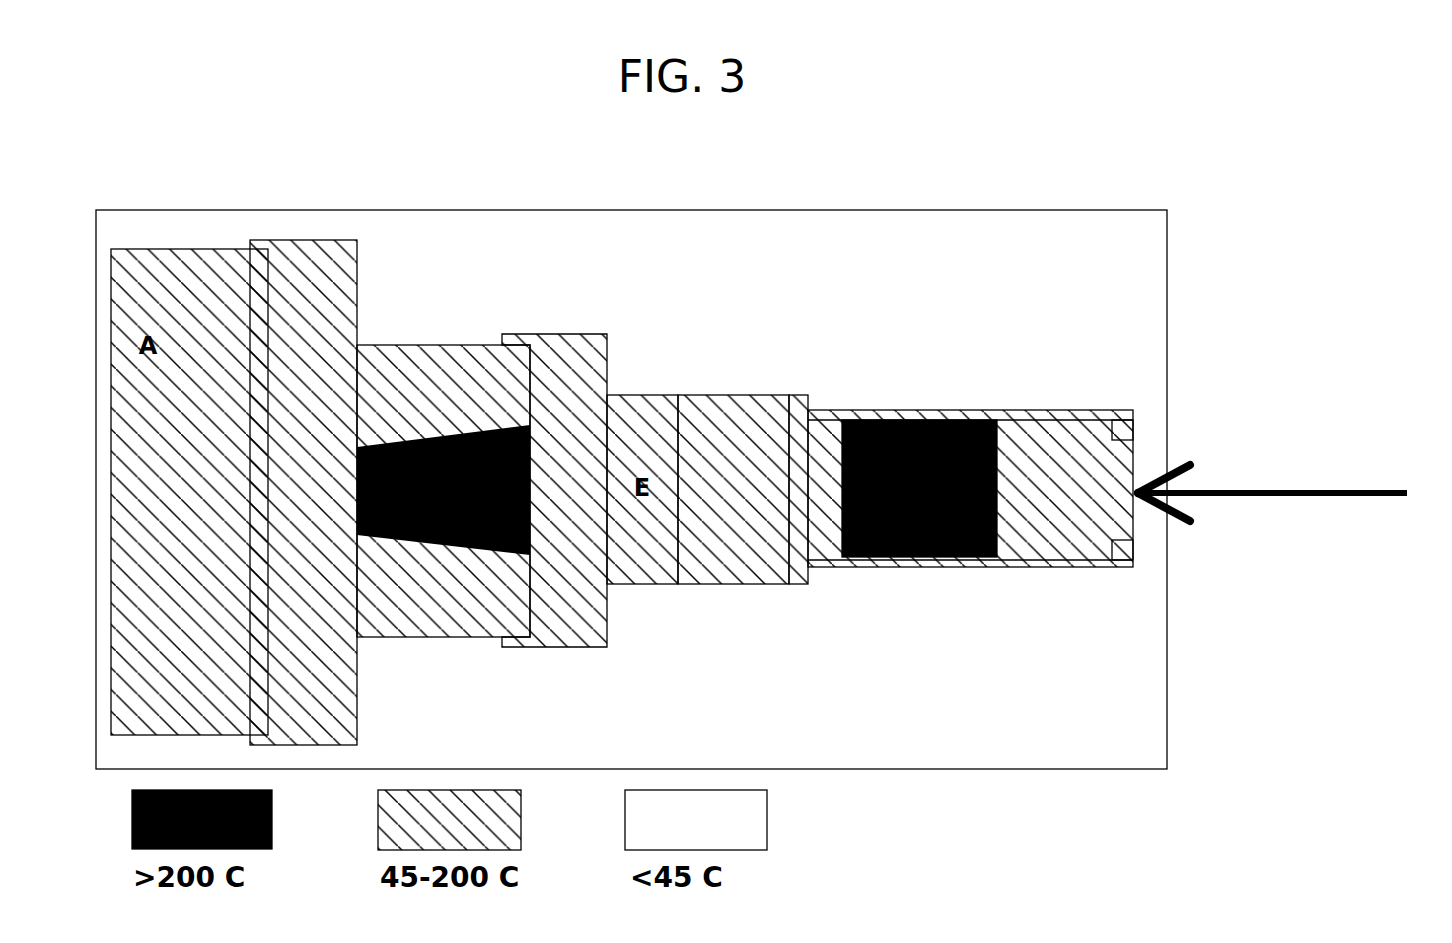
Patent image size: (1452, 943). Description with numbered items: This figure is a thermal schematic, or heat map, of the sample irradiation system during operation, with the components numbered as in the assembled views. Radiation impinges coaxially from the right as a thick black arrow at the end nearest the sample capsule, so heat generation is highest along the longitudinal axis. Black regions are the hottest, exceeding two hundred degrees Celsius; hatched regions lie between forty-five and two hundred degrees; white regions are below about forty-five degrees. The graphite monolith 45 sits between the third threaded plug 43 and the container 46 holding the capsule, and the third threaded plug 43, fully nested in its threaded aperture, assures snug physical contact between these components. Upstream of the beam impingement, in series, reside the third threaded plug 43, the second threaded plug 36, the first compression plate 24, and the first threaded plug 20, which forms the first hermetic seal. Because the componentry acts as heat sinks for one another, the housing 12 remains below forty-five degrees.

The housing 12 is at (913, 743).
The first threaded plug 20 is at (307, 373).
The first compression plate 24 is at (450, 622).
The second threaded plug 36 is at (583, 345).
The third threaded plug 43 is at (723, 400).
The graphite monolith 45 is at (903, 544).
The container 46 is at (814, 398).